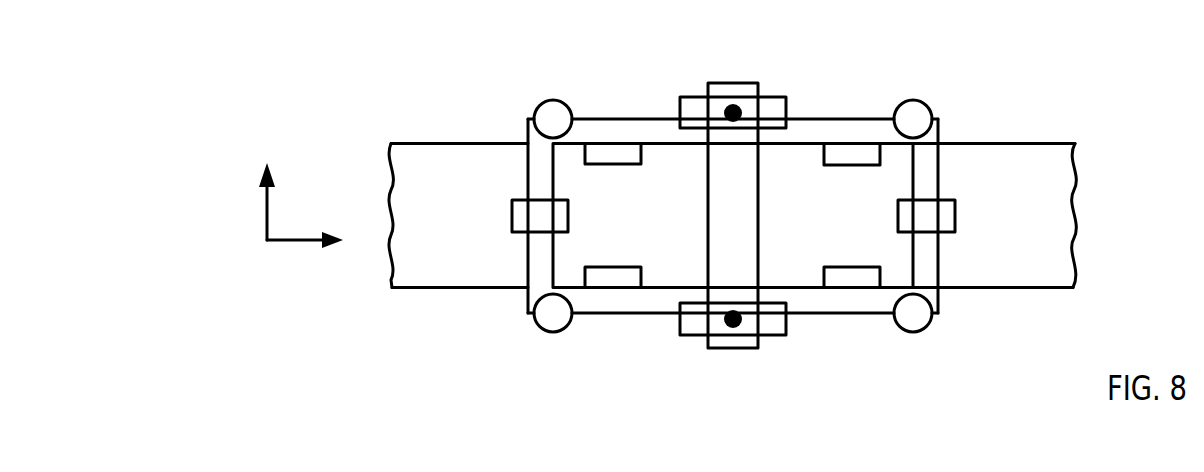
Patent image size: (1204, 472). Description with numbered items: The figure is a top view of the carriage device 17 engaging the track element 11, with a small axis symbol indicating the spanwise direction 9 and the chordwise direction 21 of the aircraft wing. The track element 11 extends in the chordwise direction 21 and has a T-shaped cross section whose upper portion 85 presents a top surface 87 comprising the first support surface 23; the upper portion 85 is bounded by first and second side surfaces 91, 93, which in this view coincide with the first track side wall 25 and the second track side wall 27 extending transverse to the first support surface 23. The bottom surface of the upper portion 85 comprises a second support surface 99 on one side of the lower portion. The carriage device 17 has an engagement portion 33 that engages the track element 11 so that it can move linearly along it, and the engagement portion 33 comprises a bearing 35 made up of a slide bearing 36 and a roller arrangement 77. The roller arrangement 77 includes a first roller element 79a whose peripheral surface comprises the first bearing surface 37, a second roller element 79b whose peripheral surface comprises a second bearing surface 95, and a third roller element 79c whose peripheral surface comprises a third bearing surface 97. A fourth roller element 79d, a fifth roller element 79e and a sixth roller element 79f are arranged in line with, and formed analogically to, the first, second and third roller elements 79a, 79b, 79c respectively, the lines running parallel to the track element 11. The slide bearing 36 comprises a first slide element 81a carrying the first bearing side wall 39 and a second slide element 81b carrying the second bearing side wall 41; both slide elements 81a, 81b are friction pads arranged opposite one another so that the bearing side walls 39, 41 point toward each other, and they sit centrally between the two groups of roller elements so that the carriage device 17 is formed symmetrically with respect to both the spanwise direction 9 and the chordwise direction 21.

The spanwise direction 9 is at (267, 212).
The chordwise direction 21 is at (298, 241).
The track element 11 is at (732, 217).
The carriage device 17 is at (827, 128).
The first support surface 23 is at (1007, 229).
The upper portion 85 is at (1057, 229).
The first track side wall 25 is at (732, 316).
The first side surface 91 is at (988, 288).
The second track side wall 27 is at (733, 117).
The second side surface 93 is at (982, 143).
The engagement portion 33 is at (590, 115).
The bearing 35 is at (540, 210).
The slide bearing 36 is at (697, 323).
The first bearing surface 37 is at (512, 218).
The first bearing side wall 39 is at (773, 303).
The second bearing side wall 41 is at (768, 132).
The roller arrangement 77 is at (600, 160).
The first roller element 79a is at (512, 223).
The second roller element 79b is at (625, 267).
The third roller element 79c is at (610, 157).
The fourth roller element 79d is at (955, 210).
The fifth roller element 79e is at (847, 272).
The sixth roller element 79f is at (875, 147).
The first slide element 81a is at (720, 330).
The second slide element 81b is at (718, 100).
The top surface 87 is at (1040, 160).
The second bearing surface 95 is at (642, 277).
The third bearing surface 97 is at (643, 150).
The second support surface 99 is at (897, 369).